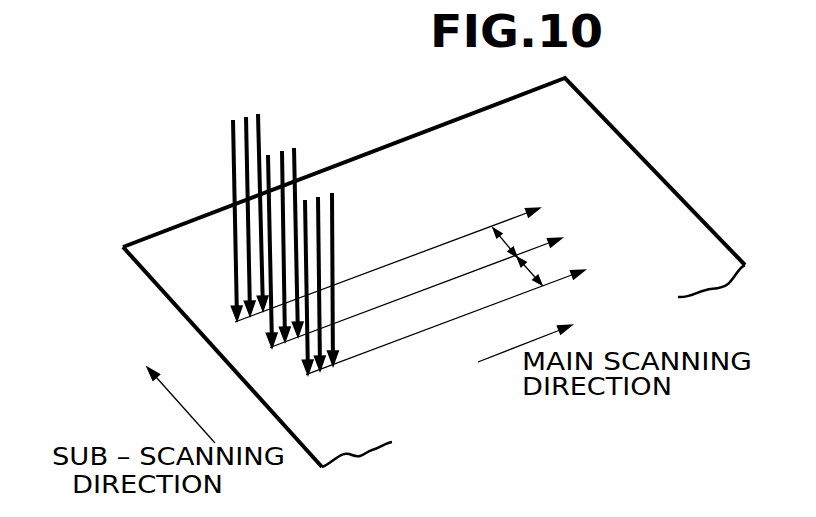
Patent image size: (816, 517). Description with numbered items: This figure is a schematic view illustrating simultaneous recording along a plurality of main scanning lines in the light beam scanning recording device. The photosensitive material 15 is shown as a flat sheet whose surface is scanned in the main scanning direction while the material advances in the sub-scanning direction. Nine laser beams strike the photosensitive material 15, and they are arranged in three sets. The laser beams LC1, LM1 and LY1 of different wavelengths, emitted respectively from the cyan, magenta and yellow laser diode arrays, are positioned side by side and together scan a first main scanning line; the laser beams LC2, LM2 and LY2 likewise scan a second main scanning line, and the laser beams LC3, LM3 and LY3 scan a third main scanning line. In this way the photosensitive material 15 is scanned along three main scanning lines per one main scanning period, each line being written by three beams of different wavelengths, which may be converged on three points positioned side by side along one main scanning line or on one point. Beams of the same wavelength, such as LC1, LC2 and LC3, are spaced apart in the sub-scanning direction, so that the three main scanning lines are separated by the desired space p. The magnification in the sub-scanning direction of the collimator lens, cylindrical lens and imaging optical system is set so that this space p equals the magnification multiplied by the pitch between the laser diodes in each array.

The photosensitive material 15 is at (648, 192).
The laser beam LY3 is at (231, 147).
The laser beam LM3 is at (245, 122).
The laser beam LC3 is at (260, 118).
The laser beam LY2 is at (269, 153).
The laser beam LM2 is at (284, 152).
The laser beam LC2 is at (297, 157).
The laser beam LY1 is at (307, 208).
The laser beam LM1 is at (320, 235).
The laser beam LC1 is at (334, 260).
The space between main scanning lines p is at (524, 253).